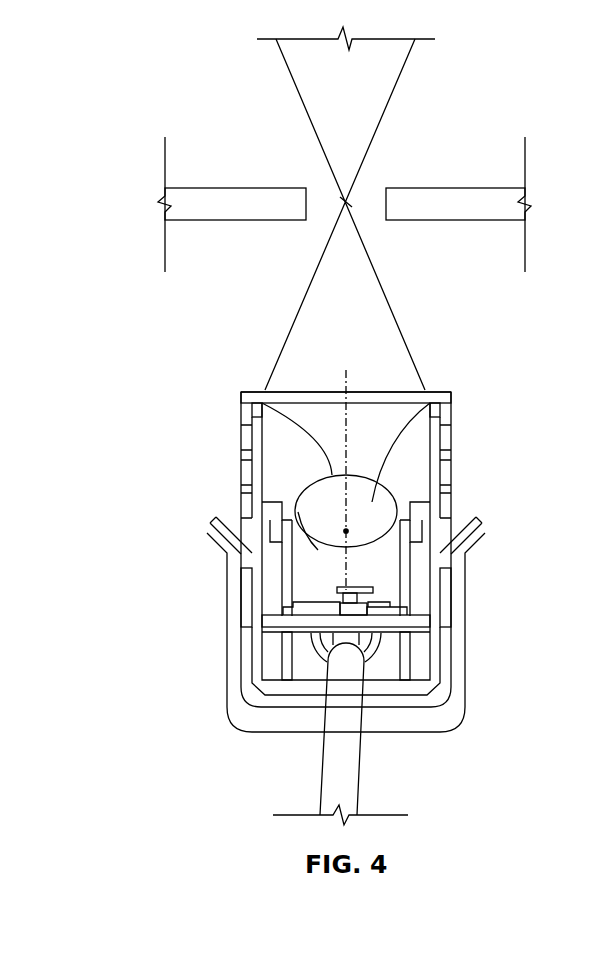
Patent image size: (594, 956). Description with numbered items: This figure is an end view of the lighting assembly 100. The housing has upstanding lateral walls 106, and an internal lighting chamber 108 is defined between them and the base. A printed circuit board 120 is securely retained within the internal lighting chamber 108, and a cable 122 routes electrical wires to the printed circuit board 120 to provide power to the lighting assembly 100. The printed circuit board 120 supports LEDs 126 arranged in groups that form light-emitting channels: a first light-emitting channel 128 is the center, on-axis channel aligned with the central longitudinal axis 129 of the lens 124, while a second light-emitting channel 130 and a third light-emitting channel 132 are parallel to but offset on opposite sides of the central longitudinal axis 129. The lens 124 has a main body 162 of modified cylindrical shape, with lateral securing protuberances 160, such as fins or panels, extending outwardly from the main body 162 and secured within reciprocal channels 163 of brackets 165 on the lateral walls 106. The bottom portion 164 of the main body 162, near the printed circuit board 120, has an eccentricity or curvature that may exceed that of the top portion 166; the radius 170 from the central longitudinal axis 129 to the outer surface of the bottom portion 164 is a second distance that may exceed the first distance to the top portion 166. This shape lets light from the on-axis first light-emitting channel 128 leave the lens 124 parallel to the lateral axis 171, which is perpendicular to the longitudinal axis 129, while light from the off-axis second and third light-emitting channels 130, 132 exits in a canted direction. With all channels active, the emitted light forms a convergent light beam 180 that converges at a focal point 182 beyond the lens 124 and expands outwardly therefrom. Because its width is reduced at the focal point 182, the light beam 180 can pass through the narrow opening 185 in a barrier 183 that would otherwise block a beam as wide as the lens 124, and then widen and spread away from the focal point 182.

The lighting assembly 100 is at (146, 414).
The lateral walls 106 is at (240, 417).
The internal lighting chamber 108 is at (346, 418).
The printed circuit board 120 is at (293, 625).
The cable 122 is at (333, 765).
The lens 124 is at (378, 503).
The LEDs 126 is at (300, 604).
The first light-emitting channel 128 is at (360, 588).
The central longitudinal axis 129 is at (285, 505).
The second light-emitting channel 130 is at (338, 600).
The third light-emitting channel 132 is at (352, 598).
The lateral securing protuberances 160 is at (270, 540).
The main body 162 is at (438, 417).
The reciprocal channels 163 is at (283, 512).
The bottom portion 164 is at (285, 524).
The brackets 165 is at (240, 548).
The top portion 166 is at (305, 520).
The radius 170 is at (392, 500).
The lateral axis 171 is at (370, 500).
The light beam 180 is at (384, 297).
The focal point 182 is at (347, 202).
The barrier 183 is at (455, 188).
The narrow opening 185 is at (314, 188).